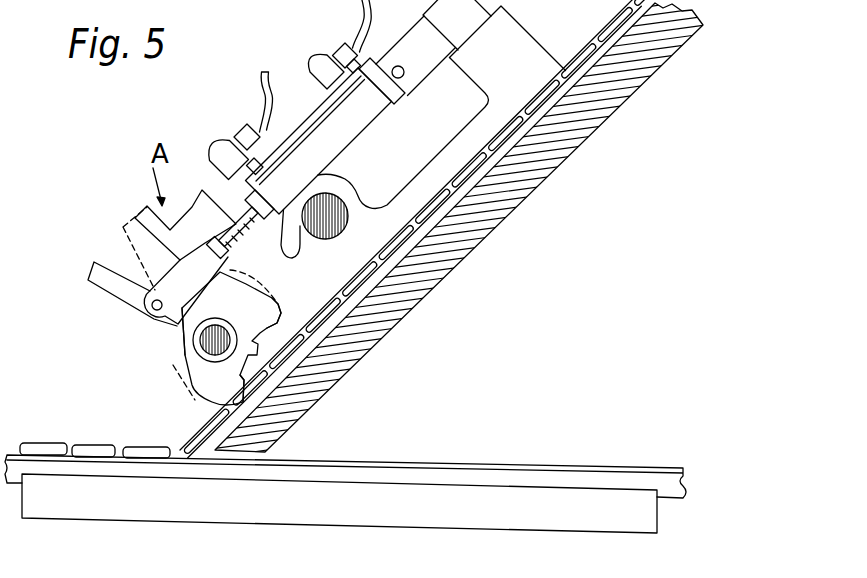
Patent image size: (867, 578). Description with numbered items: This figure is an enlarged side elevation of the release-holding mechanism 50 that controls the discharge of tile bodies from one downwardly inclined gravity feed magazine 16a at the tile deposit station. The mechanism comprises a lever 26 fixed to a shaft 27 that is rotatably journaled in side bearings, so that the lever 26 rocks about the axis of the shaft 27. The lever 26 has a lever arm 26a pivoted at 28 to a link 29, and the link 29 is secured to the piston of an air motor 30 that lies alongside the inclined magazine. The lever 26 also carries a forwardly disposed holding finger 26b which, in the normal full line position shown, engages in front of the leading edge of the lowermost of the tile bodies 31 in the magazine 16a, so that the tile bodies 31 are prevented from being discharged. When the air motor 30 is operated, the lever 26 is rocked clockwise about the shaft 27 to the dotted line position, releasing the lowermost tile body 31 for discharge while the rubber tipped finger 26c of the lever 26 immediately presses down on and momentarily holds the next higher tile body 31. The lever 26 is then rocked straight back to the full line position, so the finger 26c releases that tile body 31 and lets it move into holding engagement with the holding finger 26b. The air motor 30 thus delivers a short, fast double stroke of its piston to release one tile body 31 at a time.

The gravity feed magazine 16a is at (614, 117).
The lever 26 is at (184, 362).
The lever arm 26a is at (180, 332).
The forwardly disposed holding finger 26b is at (298, 406).
The rubber tipped finger 26c is at (282, 308).
The shaft 27 is at (231, 326).
The pivot 28 is at (150, 290).
The link 29 is at (162, 289).
The air motor 30 is at (297, 130).
The tile bodies 31 is at (427, 209).
The release-holding mechanism 50 is at (108, 305).